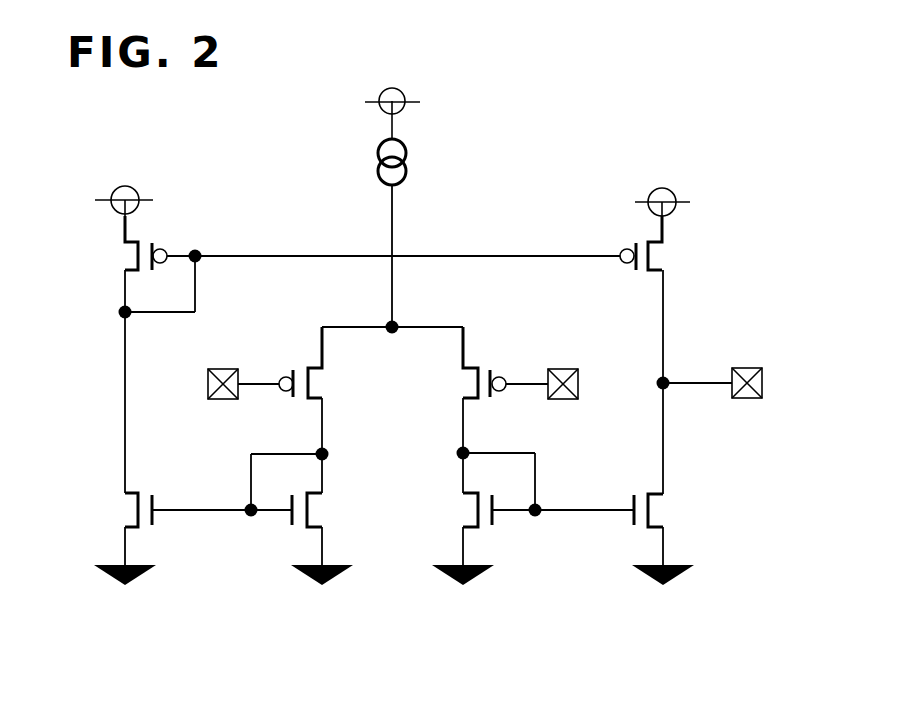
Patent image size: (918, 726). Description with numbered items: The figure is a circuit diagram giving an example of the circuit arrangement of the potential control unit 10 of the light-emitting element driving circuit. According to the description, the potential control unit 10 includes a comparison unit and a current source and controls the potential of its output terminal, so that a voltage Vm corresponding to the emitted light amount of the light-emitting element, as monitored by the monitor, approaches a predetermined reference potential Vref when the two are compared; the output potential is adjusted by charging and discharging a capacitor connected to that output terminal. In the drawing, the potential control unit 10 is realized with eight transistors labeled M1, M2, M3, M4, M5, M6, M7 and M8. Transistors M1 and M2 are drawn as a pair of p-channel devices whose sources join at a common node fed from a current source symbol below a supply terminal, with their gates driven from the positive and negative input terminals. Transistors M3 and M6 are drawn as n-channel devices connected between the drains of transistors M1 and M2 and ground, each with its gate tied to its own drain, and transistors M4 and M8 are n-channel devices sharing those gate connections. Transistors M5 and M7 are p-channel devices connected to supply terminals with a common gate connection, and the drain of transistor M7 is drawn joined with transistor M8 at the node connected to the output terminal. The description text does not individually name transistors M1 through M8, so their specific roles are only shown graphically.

The potential control unit 10 is at (583, 116).
The PMOS input transistor M1 is at (328, 385).
The PMOS input transistor M2 is at (458, 382).
The NMOS load transistor M3 is at (327, 517).
The NMOS current mirror transistor M4 is at (117, 510).
The PMOS current mirror transistor M5 is at (118, 260).
The NMOS load transistor M6 is at (458, 510).
The PMOS output transistor M7 is at (667, 257).
The NMOS output transistor M8 is at (665, 510).